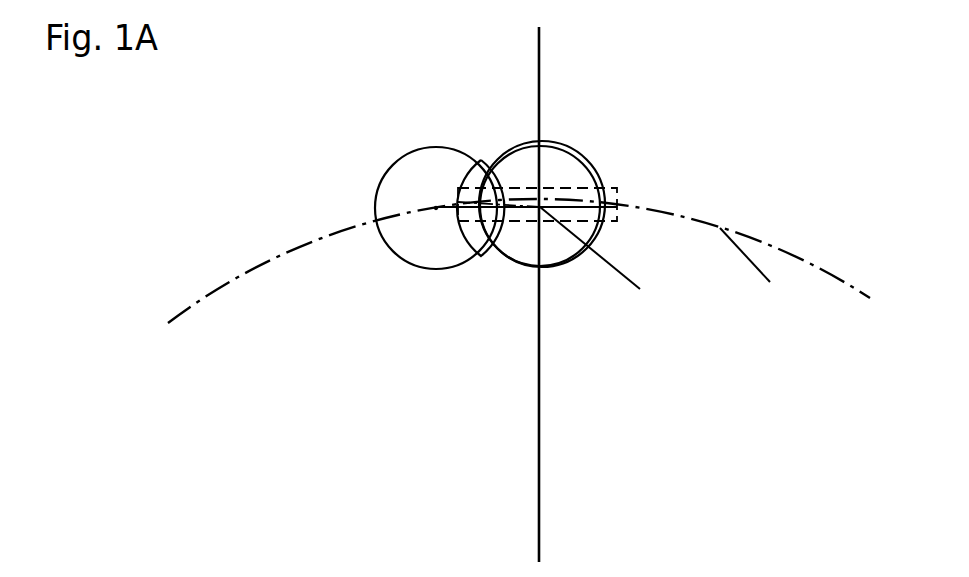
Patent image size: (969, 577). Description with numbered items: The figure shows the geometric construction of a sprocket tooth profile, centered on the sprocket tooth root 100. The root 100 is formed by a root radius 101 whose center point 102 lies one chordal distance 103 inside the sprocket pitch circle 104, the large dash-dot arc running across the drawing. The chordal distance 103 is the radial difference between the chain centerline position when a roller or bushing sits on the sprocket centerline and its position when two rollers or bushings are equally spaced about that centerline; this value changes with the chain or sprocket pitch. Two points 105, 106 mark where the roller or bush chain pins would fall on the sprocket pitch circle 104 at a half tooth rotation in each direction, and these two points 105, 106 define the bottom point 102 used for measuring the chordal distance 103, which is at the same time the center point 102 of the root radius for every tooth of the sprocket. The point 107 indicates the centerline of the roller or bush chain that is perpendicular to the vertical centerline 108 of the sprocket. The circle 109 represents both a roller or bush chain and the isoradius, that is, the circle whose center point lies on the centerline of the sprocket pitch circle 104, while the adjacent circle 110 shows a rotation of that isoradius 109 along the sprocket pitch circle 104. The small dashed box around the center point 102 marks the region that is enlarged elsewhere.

The sprocket tooth root 100 is at (560, 265).
The root radius 101 is at (503, 252).
The center point 102 is at (640, 289).
The chordal distance 103 is at (540, 207).
The sprocket pitch circle 104 is at (770, 282).
The point 105 is at (436, 208).
The point 106 is at (643, 208).
The point 107 is at (540, 207).
The centerline 108 is at (538, 113).
The circle 109 is at (563, 145).
The circle 110 is at (403, 262).